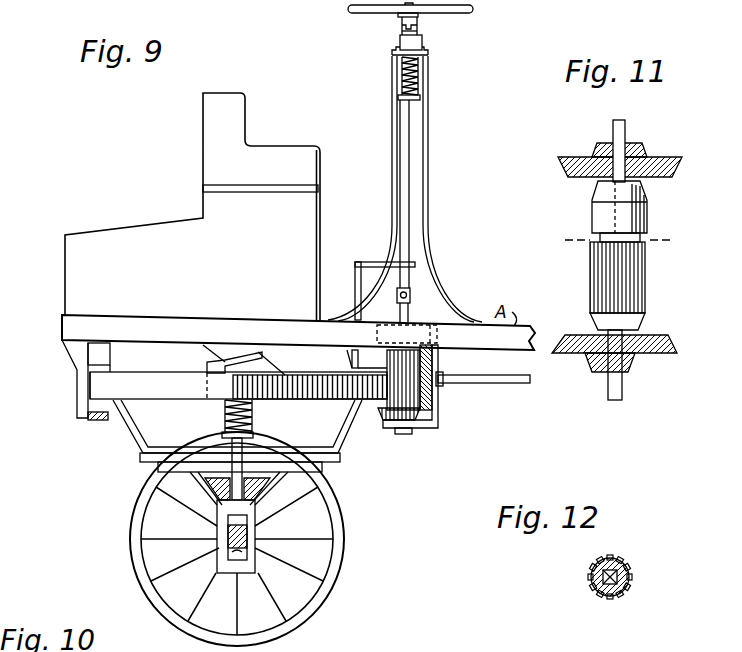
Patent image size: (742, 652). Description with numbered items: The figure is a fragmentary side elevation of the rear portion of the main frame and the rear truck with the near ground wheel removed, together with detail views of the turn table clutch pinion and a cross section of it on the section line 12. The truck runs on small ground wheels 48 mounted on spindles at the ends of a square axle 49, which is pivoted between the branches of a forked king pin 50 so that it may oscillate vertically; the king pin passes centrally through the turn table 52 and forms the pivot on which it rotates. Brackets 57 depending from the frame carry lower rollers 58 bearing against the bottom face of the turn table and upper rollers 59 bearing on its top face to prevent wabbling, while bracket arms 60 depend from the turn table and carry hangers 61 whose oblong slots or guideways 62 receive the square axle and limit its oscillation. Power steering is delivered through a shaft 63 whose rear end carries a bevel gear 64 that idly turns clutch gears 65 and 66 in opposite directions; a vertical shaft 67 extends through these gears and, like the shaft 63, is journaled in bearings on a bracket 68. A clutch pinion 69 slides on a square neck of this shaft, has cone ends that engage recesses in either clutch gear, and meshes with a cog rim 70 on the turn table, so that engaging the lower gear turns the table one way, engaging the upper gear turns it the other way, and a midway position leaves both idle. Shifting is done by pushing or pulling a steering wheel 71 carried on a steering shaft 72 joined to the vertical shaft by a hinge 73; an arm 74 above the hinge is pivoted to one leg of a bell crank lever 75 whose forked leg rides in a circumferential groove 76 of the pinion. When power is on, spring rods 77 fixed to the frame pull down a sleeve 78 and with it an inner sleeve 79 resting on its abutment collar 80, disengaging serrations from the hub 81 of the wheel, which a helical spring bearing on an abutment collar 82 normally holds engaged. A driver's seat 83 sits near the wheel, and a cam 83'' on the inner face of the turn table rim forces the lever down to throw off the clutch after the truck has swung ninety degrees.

In FIG. 11, the section line 12— 12 is at (618, 247).
In FIG. 9, the ground wheels 48 is at (140, 572).
In FIG. 9, the axle 49 is at (250, 538).
In FIG. 9, the forked king pin 50 is at (232, 496).
In FIG. 9, the turn table 52 is at (168, 388).
In FIG. 9, the brackets 57 is at (77, 382).
In FIG. 9, the lower rollers 58 is at (100, 420).
In FIG. 9, the upper rollers 59 is at (88, 352).
In FIG. 9, the bracket arms 60 is at (345, 447).
In FIG. 9, the hangers 61 is at (287, 482).
In FIG. 9, the slots or guideways 62 is at (228, 563).
In FIG. 9, the shaft 63 is at (525, 384).
In FIG. 9, the bevel gear 64 is at (426, 410).
In FIG. 9, the lower clutch gear 65 is at (423, 420).
In FIG. 11, the lower clutch gear 65 is at (658, 355).
In FIG. 11, the upper clutch gear 66 is at (665, 160).
In FIG. 9, the shaft 67 is at (410, 312).
In FIG. 11, the shaft 67 is at (624, 133).
In FIG. 12, the shaft 67 is at (608, 597).
In FIG. 9, the bracket 68 is at (438, 426).
In FIG. 9, the clutch pinion 69 is at (396, 434).
In FIG. 11, the clutch pinion 69 is at (640, 290).
In FIG. 12, the clutch pinion 69 is at (632, 577).
In FIG. 9, the cog rim 70 is at (343, 390).
In FIG. 9, the steering wheel 71 is at (473, 10).
In FIG. 9, the steering shaft 72 is at (408, 153).
In FIG. 9, the hinge 73 is at (410, 298).
In FIG. 9, the arm 74 is at (380, 262).
In FIG. 9, the bell crank lever 75 is at (355, 290).
In FIG. 11, the circumferential groove 76 is at (640, 240).
In FIG. 9, the spring rods 77 is at (428, 115).
In FIG. 9, the sleeve 78 is at (422, 43).
In FIG. 9, the inner sleeve 79 is at (400, 32).
In FIG. 9, the abutment collar 80 is at (428, 62).
In FIG. 9, the hub 81 is at (400, 20).
In FIG. 9, the abutment collar 82 is at (398, 97).
In FIG. 9, the driver's seat 83 is at (192, 207).
In FIG. 9, the cam 83'' is at (220, 360).